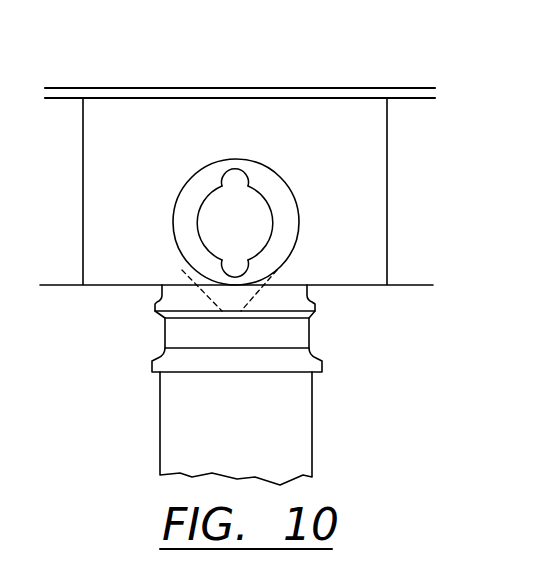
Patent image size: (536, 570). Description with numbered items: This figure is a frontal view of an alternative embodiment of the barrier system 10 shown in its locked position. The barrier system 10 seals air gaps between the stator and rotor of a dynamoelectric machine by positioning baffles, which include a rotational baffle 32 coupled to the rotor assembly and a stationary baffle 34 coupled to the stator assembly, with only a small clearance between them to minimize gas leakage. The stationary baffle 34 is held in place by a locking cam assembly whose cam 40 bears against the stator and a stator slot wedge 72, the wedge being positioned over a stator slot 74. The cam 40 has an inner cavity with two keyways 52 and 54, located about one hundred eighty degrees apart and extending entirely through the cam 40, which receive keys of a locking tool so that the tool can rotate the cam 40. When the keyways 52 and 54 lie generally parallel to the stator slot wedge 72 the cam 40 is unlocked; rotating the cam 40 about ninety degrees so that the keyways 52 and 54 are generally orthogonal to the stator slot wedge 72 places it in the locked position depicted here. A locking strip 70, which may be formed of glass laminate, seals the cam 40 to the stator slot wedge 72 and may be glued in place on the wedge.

The barrier system 10 is at (172, 83).
The rotational baffle 32 is at (318, 88).
The stationary baffle 34 is at (363, 145).
The cam 40 is at (283, 252).
The keyway 52 is at (220, 268).
The keyway 54 is at (232, 170).
The locking strip 70 is at (313, 317).
The stator slot wedge 72 is at (150, 362).
The stator slot 74 is at (172, 409).